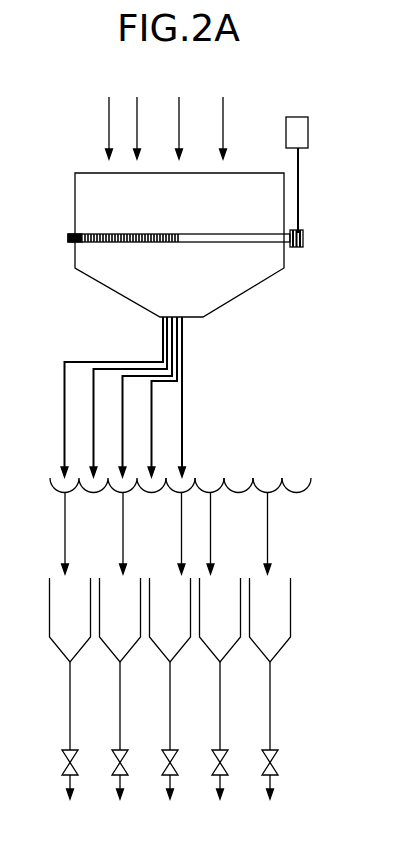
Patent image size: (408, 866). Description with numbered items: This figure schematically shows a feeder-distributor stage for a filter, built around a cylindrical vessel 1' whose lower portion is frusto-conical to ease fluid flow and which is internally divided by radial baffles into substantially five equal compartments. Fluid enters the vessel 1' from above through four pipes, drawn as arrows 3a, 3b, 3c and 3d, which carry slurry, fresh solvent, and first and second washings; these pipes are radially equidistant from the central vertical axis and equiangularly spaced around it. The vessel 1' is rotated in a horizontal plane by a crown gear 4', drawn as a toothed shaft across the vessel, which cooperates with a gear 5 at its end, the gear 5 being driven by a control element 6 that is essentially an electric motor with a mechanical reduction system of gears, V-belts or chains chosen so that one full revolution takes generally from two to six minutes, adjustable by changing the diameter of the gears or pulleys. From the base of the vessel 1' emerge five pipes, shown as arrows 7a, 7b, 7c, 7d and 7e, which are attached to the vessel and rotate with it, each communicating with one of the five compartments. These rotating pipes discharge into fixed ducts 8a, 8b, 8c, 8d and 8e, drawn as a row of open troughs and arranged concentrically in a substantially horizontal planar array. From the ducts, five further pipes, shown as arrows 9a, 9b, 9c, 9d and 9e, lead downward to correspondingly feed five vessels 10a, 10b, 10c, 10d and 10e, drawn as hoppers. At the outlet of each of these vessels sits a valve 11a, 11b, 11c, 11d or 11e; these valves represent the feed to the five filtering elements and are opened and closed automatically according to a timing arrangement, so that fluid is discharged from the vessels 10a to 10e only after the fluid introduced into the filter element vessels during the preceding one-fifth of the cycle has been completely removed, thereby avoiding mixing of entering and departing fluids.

The cylindrical vessel 1' is at (179, 245).
The crown gear 4' is at (179, 225).
The gear 5 is at (306, 241).
The control element 6 is at (297, 175).
The pipe 3a is at (223, 116).
The pipe 3b is at (138, 116).
The pipe 3c is at (105, 116).
The pipe 3d is at (177, 116).
The pipe 7a is at (100, 397).
The pipe 7b is at (118, 397).
The pipe 7c is at (136, 397).
The pipe 7d is at (153, 397).
The pipe 7e is at (172, 397).
The fixed duct 8a is at (296, 474).
The fixed duct 8b is at (267, 474).
The fixed duct 8c is at (239, 474).
The fixed duct 8d is at (212, 474).
The fixed duct 8e is at (185, 474).
The pipe 9a is at (77, 533).
The pipe 9b is at (280, 533).
The pipe 9c is at (136, 533).
The pipe 9d is at (223, 533).
The pipe 9e is at (192, 533).
The vessel 10a is at (70, 620).
The vessel 10b is at (270, 620).
The vessel 10c is at (120, 620).
The vessel 10d is at (220, 620).
The vessel 10e is at (170, 620).
The valve 11a is at (80, 730).
The valve 11b is at (280, 730).
The valve 11c is at (130, 730).
The valve 11d is at (230, 730).
The valve 11e is at (180, 730).